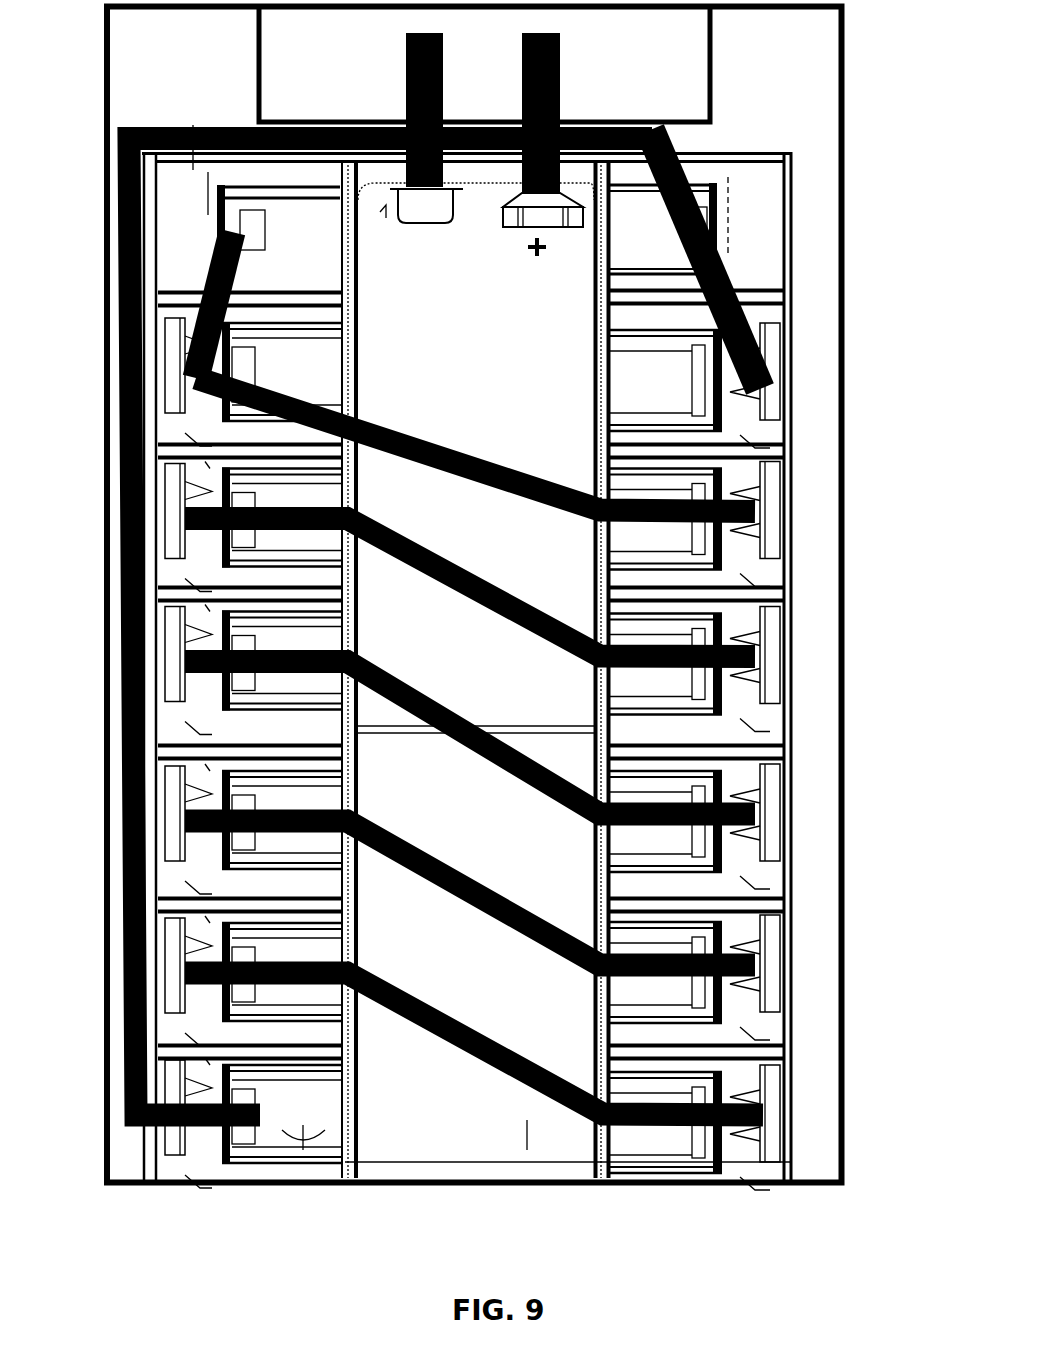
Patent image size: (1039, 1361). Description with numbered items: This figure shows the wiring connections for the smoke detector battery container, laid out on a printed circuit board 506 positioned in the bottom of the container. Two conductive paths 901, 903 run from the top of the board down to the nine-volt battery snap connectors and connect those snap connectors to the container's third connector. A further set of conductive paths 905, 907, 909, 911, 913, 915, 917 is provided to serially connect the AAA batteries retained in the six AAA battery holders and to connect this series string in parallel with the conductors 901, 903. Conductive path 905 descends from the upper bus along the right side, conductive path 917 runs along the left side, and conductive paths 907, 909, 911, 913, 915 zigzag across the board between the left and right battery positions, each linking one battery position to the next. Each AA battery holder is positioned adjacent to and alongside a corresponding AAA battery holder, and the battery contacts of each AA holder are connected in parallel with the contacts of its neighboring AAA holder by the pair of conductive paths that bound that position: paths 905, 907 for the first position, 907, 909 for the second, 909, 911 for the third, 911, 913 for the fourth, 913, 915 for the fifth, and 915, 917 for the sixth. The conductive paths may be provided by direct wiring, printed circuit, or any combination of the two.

The printed circuit board 506 is at (798, 110).
The conductive path 901 is at (560, 113).
The conductive path 903 is at (405, 90).
The conductive path 905 is at (663, 212).
The conductive path 907 is at (535, 474).
The conductive path 909 is at (538, 607).
The conductive path 911 is at (510, 746).
The conductive path 913 is at (487, 885).
The conductive path 915 is at (473, 1027).
The conductive path 917 is at (127, 808).